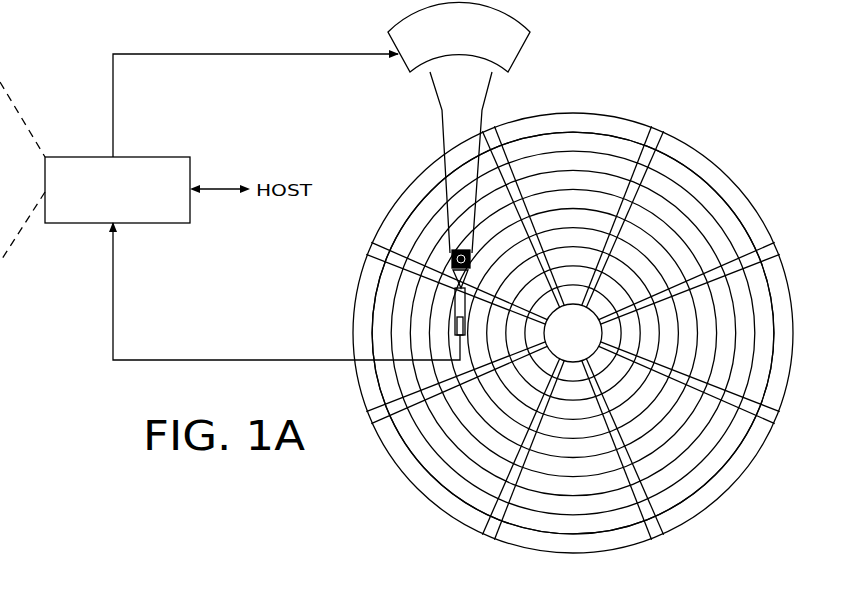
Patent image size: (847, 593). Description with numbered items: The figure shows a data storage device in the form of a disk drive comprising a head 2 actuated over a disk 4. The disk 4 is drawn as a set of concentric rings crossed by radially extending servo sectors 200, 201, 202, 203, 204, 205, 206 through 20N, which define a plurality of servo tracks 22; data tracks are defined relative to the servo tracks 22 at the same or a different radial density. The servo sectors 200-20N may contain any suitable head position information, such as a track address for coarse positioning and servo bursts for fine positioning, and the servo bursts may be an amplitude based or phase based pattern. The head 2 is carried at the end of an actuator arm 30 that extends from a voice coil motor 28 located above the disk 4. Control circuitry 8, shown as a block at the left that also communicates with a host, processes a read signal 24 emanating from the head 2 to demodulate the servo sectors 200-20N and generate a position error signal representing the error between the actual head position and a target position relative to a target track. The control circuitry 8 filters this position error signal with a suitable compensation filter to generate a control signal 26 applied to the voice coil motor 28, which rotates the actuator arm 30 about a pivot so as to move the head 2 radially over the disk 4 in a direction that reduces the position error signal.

The head 2 is at (452, 326).
The disk 4 is at (724, 162).
The control circuitry 8 is at (156, 157).
The servo sector 20N is at (500, 133).
The servo sector 200 is at (661, 132).
The servo sector 201 is at (770, 253).
The servo sector 202 is at (771, 416).
The servo sector 203 is at (648, 530).
The servo sector 204 is at (490, 527).
The servo sector 205 is at (374, 414).
The servo sector 206 is at (374, 247).
The servo tracks 22 is at (557, 142).
The read signal 24 is at (272, 360).
The control signal 26 is at (112, 90).
The voice coil motor 28 is at (400, 74).
The actuator arm 30 is at (440, 121).